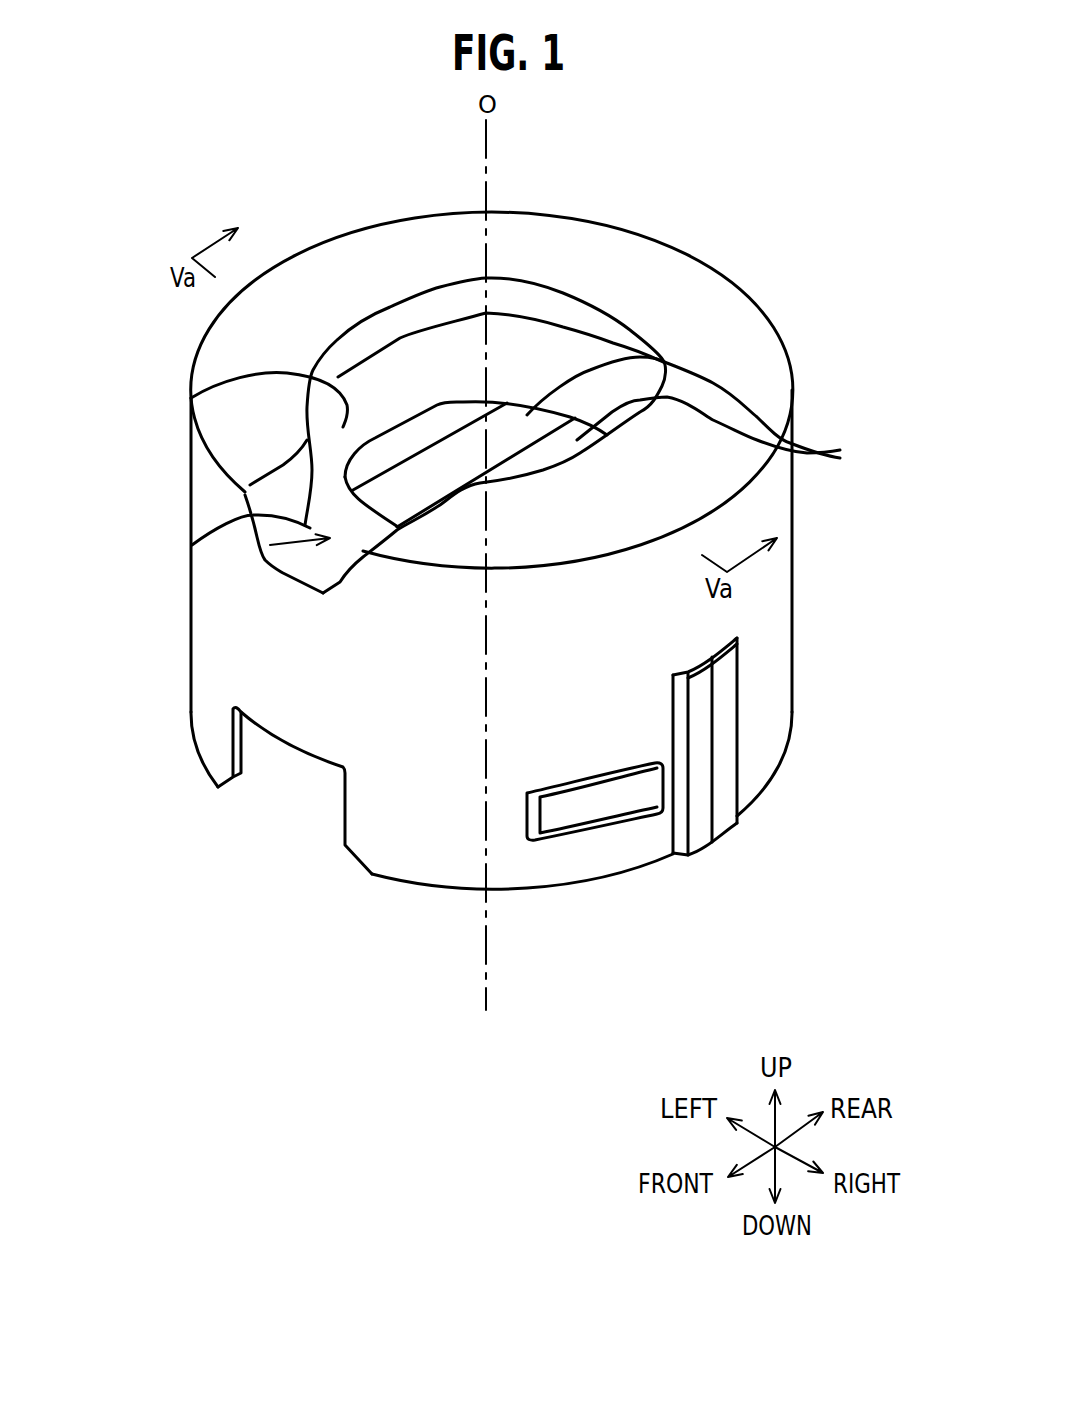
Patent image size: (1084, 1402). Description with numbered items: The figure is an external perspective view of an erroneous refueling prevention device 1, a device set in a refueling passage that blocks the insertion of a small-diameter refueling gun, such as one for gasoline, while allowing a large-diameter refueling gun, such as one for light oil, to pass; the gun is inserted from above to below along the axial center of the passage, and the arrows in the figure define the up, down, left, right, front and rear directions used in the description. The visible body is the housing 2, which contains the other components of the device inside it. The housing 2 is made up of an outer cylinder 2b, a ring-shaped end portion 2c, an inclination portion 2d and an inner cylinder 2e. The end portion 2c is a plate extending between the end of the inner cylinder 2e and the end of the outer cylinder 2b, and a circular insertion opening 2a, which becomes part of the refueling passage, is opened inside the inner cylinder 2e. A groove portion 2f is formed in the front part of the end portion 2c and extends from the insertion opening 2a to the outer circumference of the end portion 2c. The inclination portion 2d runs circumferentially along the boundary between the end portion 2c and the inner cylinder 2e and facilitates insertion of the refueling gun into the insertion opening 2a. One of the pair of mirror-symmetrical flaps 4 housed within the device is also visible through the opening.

The erroneous refueling prevention device 1 is at (737, 222).
The housing 2 is at (773, 327).
The insertion opening 2a is at (573, 336).
The outer cylinder 2b is at (777, 630).
The end portion 2c is at (773, 377).
The inclination portion 2d is at (395, 318).
The inner cylinder 2e is at (183, 398).
The groove portion 2f is at (192, 545).
The flap 4 is at (838, 457).